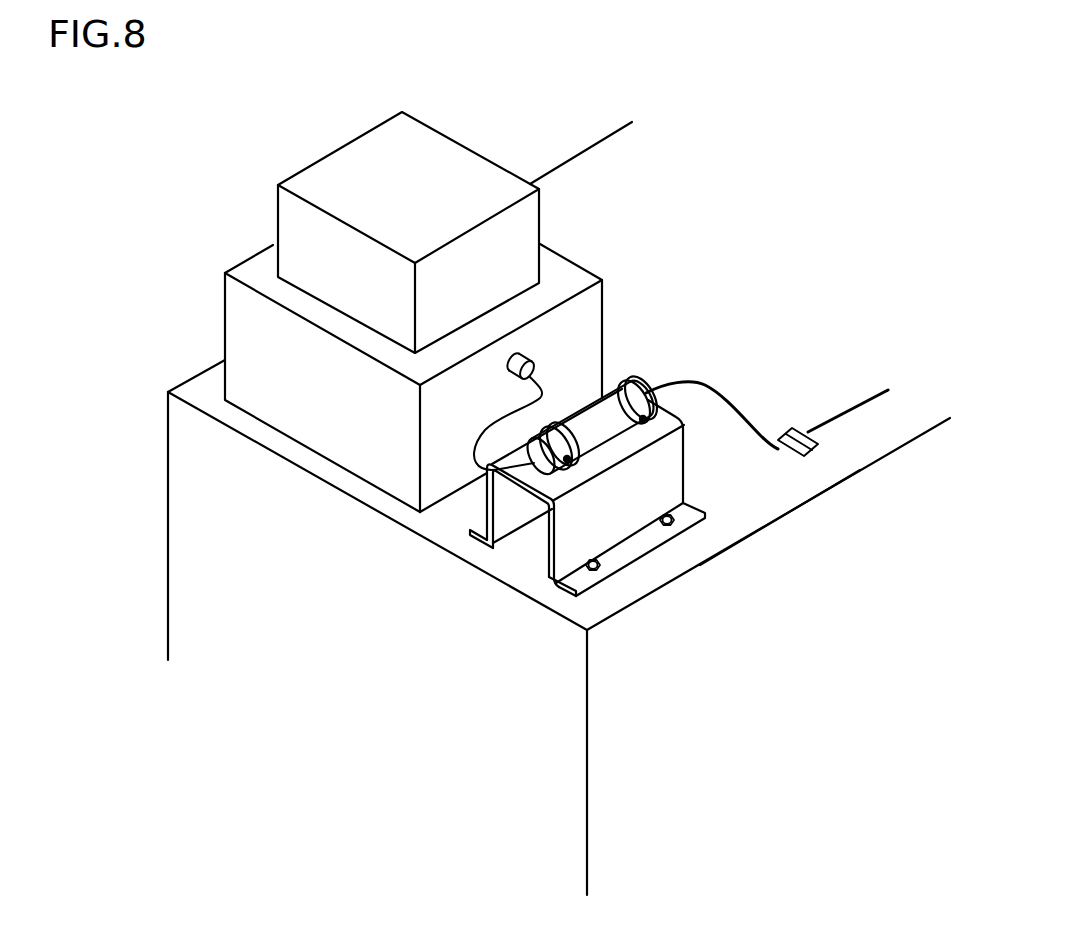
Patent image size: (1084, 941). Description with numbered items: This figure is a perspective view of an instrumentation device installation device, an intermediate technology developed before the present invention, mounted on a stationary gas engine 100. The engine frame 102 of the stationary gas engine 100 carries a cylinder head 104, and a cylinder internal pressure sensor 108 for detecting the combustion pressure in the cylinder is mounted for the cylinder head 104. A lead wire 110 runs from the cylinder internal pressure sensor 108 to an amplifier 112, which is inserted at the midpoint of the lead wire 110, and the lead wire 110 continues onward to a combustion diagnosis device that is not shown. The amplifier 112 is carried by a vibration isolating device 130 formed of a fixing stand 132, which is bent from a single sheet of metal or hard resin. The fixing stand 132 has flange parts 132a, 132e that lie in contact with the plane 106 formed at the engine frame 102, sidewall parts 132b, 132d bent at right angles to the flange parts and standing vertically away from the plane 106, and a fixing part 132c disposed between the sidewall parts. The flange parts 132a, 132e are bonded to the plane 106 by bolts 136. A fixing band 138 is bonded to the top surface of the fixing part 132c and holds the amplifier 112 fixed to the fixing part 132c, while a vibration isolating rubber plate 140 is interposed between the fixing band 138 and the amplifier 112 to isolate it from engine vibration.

The stationary gas engine 100 is at (314, 118).
The engine frame 102 is at (167, 453).
The cylinder head 104 is at (225, 307).
The plane 106 is at (753, 495).
The cylinder internal pressure sensor 108 is at (528, 355).
The lead wire 110 is at (722, 394).
The amplifier 112 is at (627, 410).
The vibration isolating device 130 is at (512, 565).
The fixing stand 132 is at (522, 565).
The flange part 132a is at (476, 537).
The sidewall part 132b is at (493, 517).
The fixing part 132c is at (525, 492).
The sidewall part 132d is at (551, 548).
The flange part 132e is at (567, 583).
The bolts 136 is at (597, 578).
The fixing band 138 is at (650, 420).
The vibration isolating rubber plate 140 is at (643, 421).